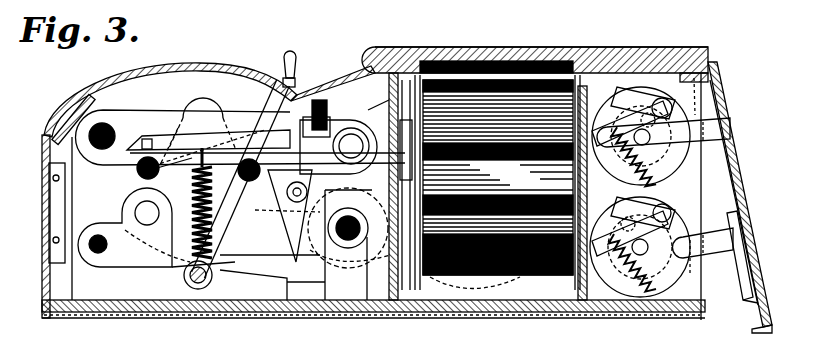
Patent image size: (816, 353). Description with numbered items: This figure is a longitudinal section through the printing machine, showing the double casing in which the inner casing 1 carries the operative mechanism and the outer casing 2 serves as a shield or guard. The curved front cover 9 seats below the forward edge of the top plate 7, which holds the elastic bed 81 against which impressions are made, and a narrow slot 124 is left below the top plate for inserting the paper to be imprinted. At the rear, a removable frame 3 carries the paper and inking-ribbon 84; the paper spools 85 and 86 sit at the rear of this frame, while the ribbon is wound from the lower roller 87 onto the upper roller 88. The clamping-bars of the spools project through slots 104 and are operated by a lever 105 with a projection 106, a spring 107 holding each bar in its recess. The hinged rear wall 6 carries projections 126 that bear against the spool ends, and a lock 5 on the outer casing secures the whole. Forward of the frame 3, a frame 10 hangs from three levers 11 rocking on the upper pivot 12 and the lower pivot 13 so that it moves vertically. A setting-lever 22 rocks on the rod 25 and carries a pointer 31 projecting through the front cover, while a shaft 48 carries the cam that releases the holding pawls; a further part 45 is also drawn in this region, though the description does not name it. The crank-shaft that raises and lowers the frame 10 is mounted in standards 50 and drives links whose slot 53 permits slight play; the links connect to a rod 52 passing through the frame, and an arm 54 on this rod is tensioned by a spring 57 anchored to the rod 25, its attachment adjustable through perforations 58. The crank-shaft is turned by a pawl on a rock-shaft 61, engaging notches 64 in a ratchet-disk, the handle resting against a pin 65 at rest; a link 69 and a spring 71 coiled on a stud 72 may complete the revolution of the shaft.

The inner casing 1 is at (436, 320).
The outer casing 2 is at (42, 238).
The frame 3 is at (566, 322).
The lock 5 is at (744, 292).
The rear wall 6 is at (722, 131).
The top plate 7 is at (598, 46).
The front cover 9 is at (200, 66).
The frame 10 is at (368, 110).
The levers 11 is at (116, 178).
The upper pivot 12 is at (240, 128).
The lower pivot 13 is at (97, 255).
The levers 22 is at (280, 80).
The rod 25 is at (184, 276).
The pointer 31 is at (296, 80).
The roller 45 is at (290, 212).
The shaft 48 is at (320, 98).
The standards 50 is at (306, 282).
The rod 52 is at (353, 128).
The slot 53 is at (246, 177).
The arm 54 is at (227, 142).
The spring 57 is at (168, 238).
The perforations 58 is at (151, 144).
The rock-shaft 61 is at (368, 229).
The notches 64 is at (347, 268).
The pin 65 is at (290, 217).
The link 69 is at (160, 210).
The spring 71 is at (140, 173).
The stud 72 is at (208, 112).
The elastic bed 81 is at (500, 58).
The inking-ribbon 84 is at (610, 168).
The roller 85 is at (682, 196).
The roller 86 is at (694, 195).
The roller 87 is at (510, 277).
The roller 88 is at (528, 87).
The slots 104 is at (627, 100).
The lever 105 is at (632, 118).
The projection 106 is at (626, 155).
The spring 107 is at (652, 145).
The slot 124 is at (383, 50).
The projections 126 is at (722, 126).